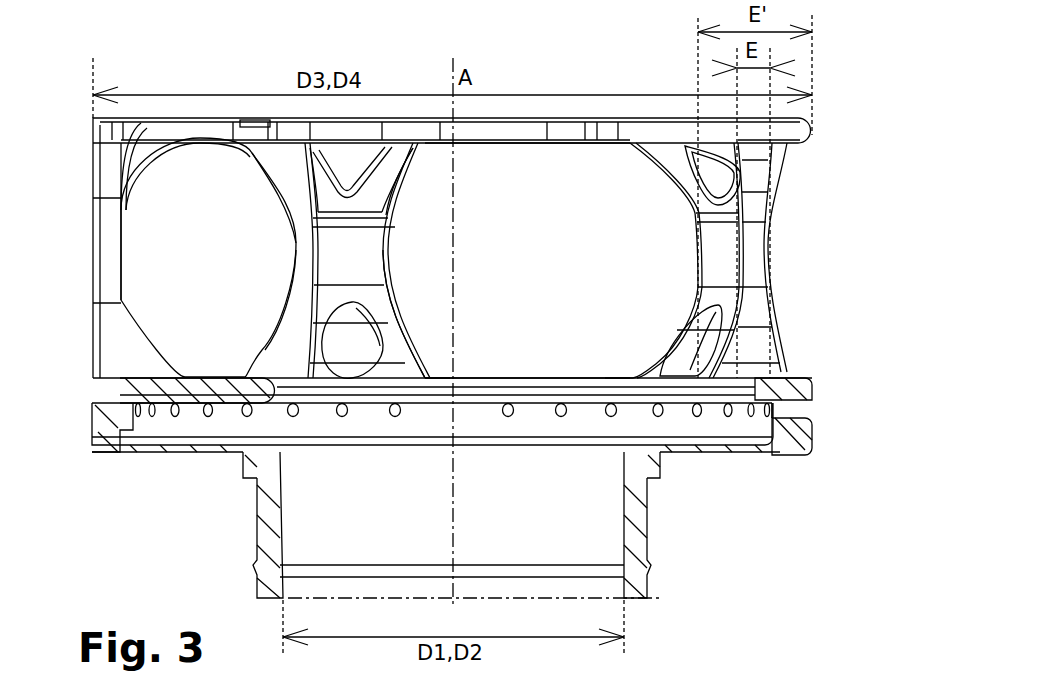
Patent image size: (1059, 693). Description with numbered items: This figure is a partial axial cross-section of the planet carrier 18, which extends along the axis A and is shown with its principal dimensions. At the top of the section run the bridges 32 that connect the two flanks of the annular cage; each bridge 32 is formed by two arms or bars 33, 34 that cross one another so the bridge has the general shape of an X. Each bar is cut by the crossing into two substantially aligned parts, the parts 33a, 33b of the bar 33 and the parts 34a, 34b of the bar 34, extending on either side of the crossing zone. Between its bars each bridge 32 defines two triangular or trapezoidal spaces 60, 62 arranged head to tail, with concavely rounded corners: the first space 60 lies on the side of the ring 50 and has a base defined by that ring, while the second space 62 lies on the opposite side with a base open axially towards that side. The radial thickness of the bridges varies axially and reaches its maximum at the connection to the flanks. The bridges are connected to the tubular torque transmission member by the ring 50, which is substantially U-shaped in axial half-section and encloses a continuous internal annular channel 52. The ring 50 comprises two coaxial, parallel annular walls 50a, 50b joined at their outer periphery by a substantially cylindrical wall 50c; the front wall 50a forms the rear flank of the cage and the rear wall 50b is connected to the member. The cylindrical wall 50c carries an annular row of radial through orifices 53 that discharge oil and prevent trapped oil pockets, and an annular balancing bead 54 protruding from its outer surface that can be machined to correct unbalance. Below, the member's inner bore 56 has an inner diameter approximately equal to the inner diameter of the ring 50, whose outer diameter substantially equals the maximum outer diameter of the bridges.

The planet carrier 18 is at (830, 88).
The bridge 32 is at (438, 165).
The bar 33 is at (246, 372).
The bar part 33a is at (387, 185).
The bar part 33b is at (275, 347).
The bar 34 is at (436, 340).
The bar part 34a is at (278, 173).
The bar part 34b is at (428, 345).
The ring 50 is at (818, 421).
The front wall 50a is at (190, 390).
The rear wall 50b is at (218, 430).
The cylindrical wall 50c is at (113, 435).
The internal annular channel 52 is at (745, 455).
The through orifice 53 is at (118, 380).
The annular balancing bead 54 is at (793, 438).
The inner bore 56 is at (636, 556).
The first space 60 is at (352, 340).
The second space 62 is at (352, 170).